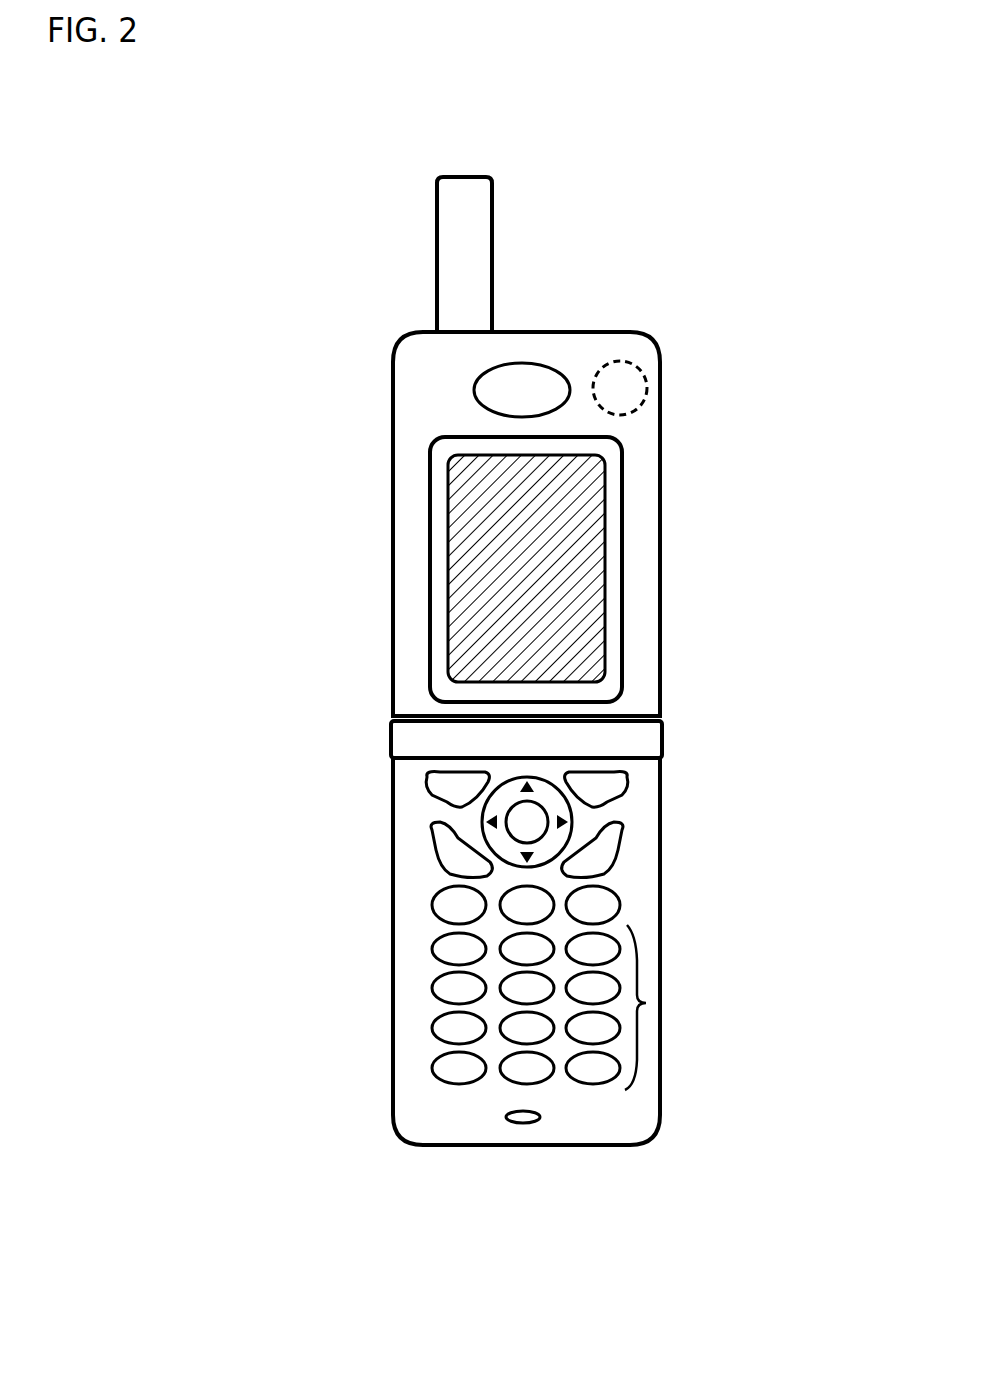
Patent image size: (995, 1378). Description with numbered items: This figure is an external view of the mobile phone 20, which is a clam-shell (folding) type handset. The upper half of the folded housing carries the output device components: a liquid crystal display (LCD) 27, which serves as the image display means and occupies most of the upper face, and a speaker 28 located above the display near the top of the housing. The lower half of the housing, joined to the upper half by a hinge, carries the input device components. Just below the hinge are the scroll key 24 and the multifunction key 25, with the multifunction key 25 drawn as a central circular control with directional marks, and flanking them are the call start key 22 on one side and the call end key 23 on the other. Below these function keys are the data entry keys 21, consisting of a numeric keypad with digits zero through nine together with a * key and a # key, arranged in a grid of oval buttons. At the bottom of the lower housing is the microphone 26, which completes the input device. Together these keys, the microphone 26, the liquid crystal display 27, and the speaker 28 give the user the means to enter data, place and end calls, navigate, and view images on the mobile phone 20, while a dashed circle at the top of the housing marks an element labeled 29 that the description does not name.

The mobile phone 20 is at (678, 485).
The data entry keys 21 is at (647, 1003).
The call start key 22 is at (432, 852).
The call end key 23 is at (622, 852).
The scroll key 24 is at (506, 815).
The multifunction key 25 is at (534, 822).
The microphone 26 is at (540, 1115).
The liquid crystal display 27 is at (622, 582).
The speaker 28 is at (474, 386).
The camera 29 is at (647, 387).